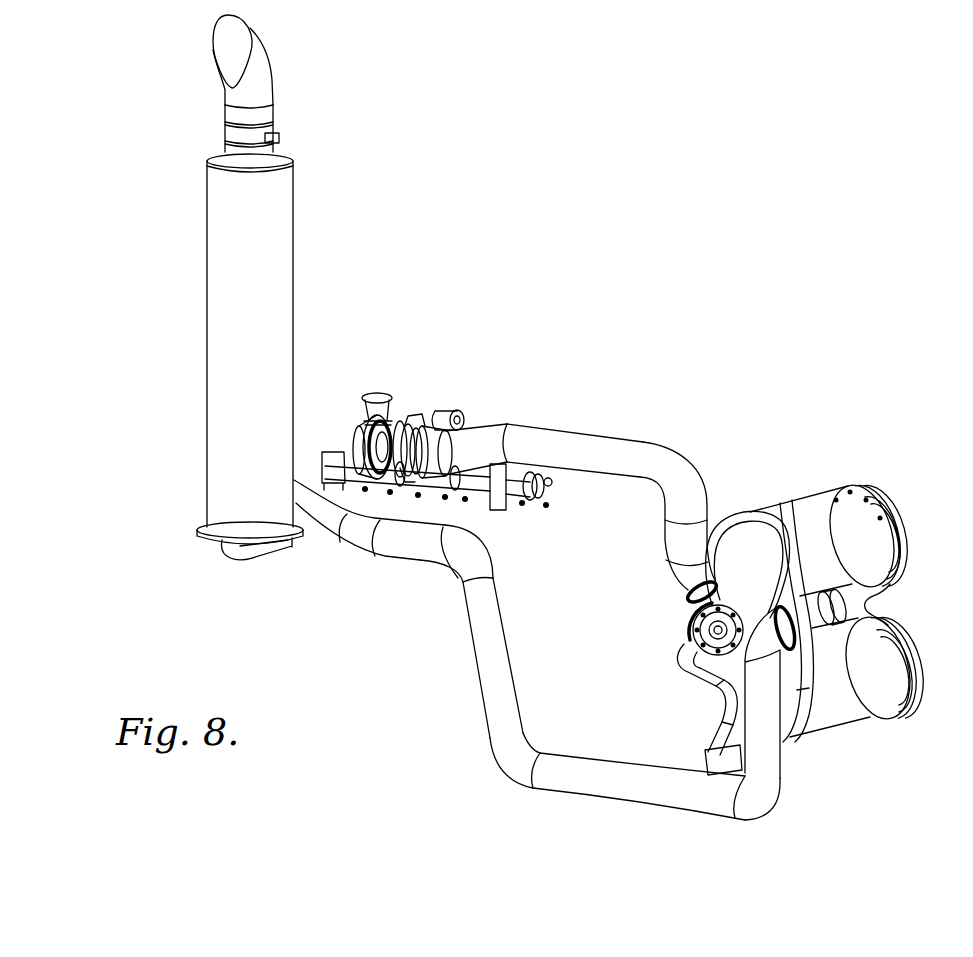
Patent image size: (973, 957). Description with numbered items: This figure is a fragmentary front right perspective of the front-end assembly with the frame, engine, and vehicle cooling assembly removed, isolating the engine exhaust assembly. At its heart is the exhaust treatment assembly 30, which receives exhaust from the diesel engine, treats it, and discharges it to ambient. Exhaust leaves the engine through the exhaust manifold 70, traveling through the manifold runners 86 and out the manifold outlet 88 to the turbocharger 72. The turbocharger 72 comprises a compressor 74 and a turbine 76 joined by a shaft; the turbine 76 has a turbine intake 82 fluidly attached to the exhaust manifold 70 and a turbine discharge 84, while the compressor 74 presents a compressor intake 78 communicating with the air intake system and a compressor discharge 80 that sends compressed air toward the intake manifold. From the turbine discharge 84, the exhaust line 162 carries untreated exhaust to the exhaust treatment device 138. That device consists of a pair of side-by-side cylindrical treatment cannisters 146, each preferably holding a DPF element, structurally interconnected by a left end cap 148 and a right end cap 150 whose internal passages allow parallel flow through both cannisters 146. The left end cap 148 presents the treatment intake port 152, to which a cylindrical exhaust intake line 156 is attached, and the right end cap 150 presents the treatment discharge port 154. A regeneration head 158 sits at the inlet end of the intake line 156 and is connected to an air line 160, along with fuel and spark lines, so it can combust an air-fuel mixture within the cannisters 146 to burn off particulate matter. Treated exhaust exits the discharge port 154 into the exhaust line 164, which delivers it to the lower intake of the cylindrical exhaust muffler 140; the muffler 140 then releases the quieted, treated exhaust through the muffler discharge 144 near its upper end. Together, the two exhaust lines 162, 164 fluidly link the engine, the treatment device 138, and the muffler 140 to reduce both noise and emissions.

The exhaust treatment assembly 30 is at (734, 240).
The exhaust manifold 70 is at (527, 492).
The turbocharger 72 is at (397, 427).
The compressor 74 is at (390, 420).
The turbine 76 is at (420, 437).
The compressor intake 78 is at (355, 442).
The compressor discharge 80 is at (377, 395).
The turbine intake 82 is at (417, 478).
The turbine discharge 84 is at (423, 448).
The manifold runners 86 is at (547, 485).
The manifold outlet 88 is at (423, 483).
The exhaust treatment device 138 is at (885, 532).
The exhaust muffler 140 is at (277, 212).
The muffler discharge 144 is at (233, 52).
The treatment cannisters 146 is at (807, 503).
The left end cap 148 is at (882, 492).
The right end cap 150 is at (733, 553).
The treatment intake port 152 is at (840, 603).
The treatment discharge port 154 is at (793, 640).
The exhaust intake line 156 is at (820, 610).
The regeneration head 158 is at (700, 633).
The air line 160 is at (710, 737).
The exhaust line 162 is at (617, 445).
The exhaust line 164 is at (493, 679).